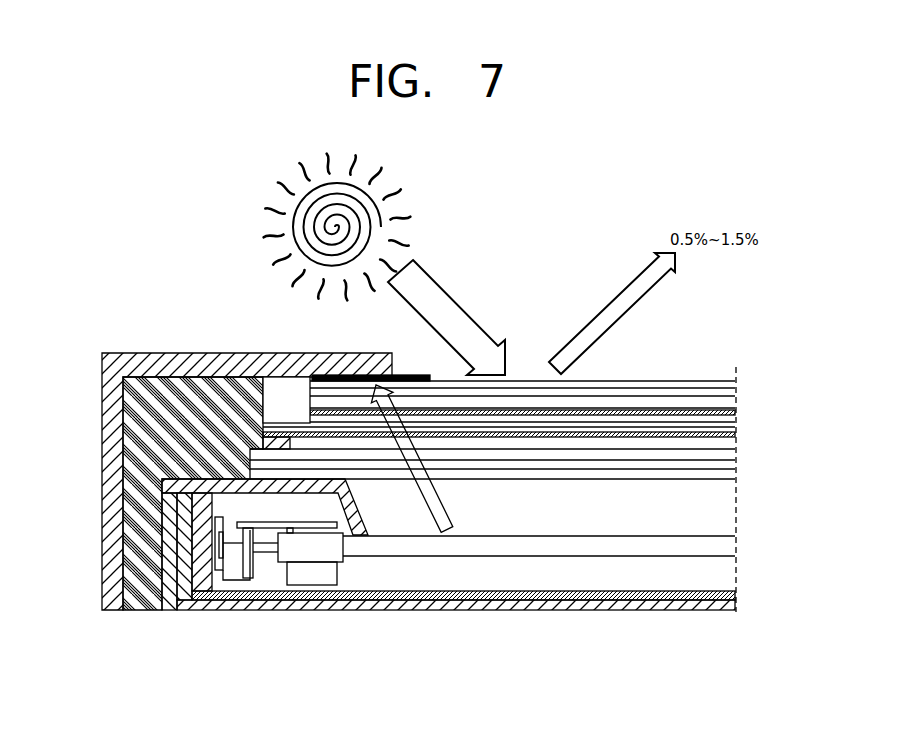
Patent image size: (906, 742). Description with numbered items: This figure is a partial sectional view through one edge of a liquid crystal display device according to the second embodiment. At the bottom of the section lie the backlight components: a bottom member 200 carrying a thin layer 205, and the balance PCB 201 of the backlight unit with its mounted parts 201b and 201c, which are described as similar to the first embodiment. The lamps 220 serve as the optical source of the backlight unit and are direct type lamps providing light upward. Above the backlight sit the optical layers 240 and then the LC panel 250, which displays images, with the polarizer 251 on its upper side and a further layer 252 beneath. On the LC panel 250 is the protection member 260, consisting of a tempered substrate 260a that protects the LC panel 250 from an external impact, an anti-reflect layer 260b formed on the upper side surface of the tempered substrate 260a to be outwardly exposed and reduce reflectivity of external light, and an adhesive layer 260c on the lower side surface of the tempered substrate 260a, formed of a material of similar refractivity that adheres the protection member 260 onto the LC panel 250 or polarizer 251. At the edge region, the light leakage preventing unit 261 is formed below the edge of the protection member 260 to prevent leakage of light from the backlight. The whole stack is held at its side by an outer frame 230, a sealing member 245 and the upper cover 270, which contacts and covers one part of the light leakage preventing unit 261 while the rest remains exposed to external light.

The substrate 200 is at (737, 606).
The balance PCB 201 is at (184, 611).
The electrode 201b is at (223, 581).
The semiconductor element 201c is at (310, 586).
The insulating layer 205 is at (737, 594).
The lamps 220 is at (737, 546).
The housing frame 230 is at (167, 537).
The optical layer stack 240 is at (742, 449).
The sealing member 245 is at (138, 457).
The LC panel 250 is at (737, 425).
The polarizer 251 is at (737, 411).
The adhesive layer 252 is at (737, 436).
The protection member 260 is at (740, 330).
The tempered substrate 260a is at (680, 388).
The anti-reflect layer 260b is at (636, 384).
The adhesive layer 260c is at (724, 388).
The light leakage preventing unit 261 is at (323, 374).
The upper cover 270 is at (110, 500).